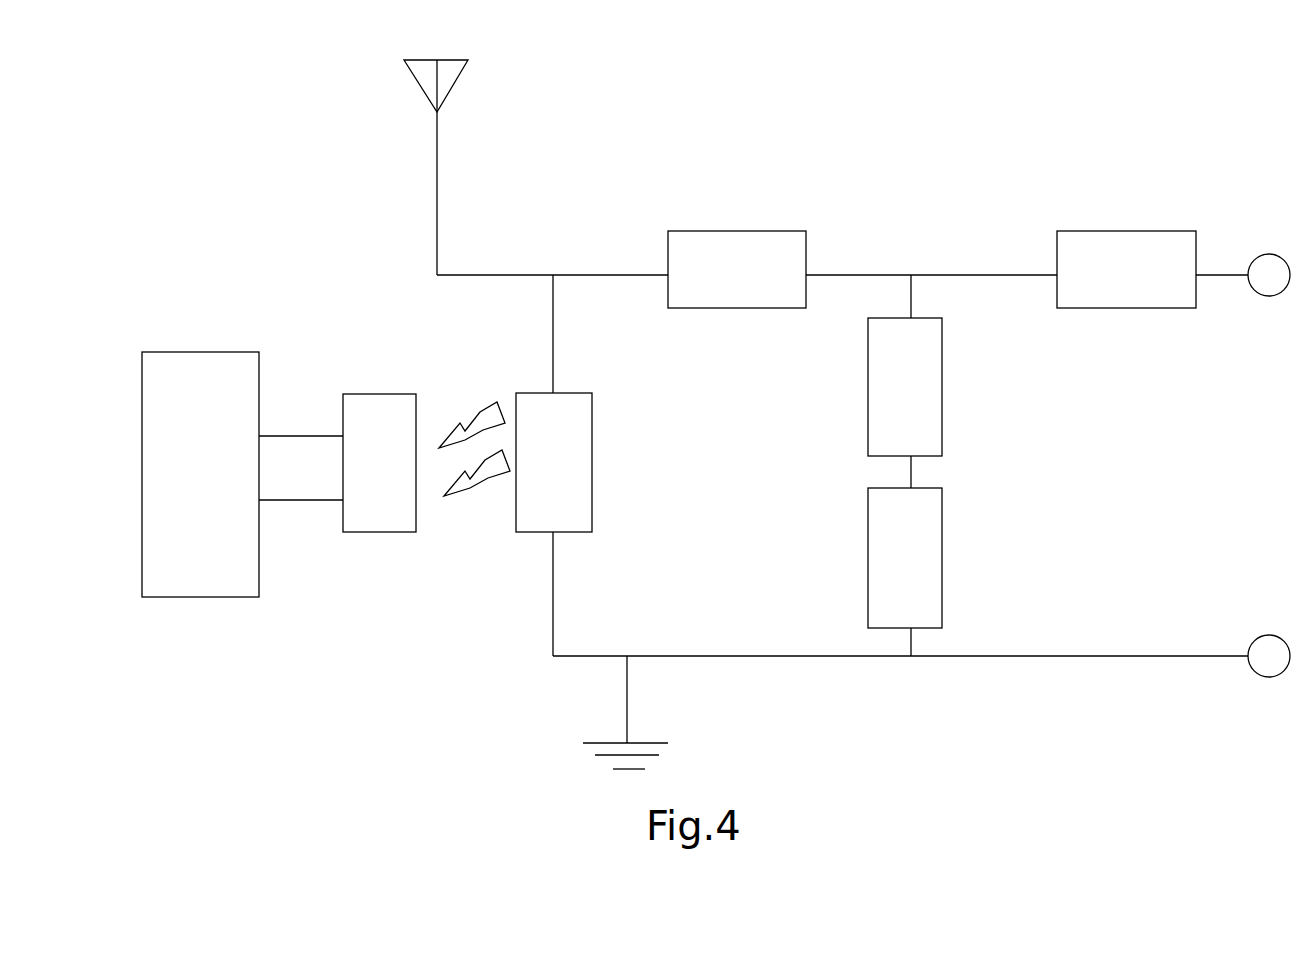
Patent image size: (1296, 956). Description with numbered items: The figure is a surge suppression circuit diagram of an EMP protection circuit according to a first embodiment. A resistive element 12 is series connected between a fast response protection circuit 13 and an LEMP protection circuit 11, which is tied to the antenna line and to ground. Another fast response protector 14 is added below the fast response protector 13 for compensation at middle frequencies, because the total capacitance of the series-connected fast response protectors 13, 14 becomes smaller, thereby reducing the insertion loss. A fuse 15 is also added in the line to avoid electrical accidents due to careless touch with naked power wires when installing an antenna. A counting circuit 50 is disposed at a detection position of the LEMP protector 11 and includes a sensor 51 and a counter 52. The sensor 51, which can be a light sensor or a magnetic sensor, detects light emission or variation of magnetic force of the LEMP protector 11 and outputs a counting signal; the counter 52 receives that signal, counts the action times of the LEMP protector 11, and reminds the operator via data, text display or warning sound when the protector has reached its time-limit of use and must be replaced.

The LEMP protection circuit 11 is at (583, 490).
The resistive element 12 is at (763, 231).
The fast response protection circuit 13 is at (942, 412).
The fast response protector 14 is at (942, 585).
The fuse 15 is at (1100, 231).
The counting circuit 50 is at (270, 460).
The sensor 51 is at (380, 532).
The counter 52 is at (207, 597).